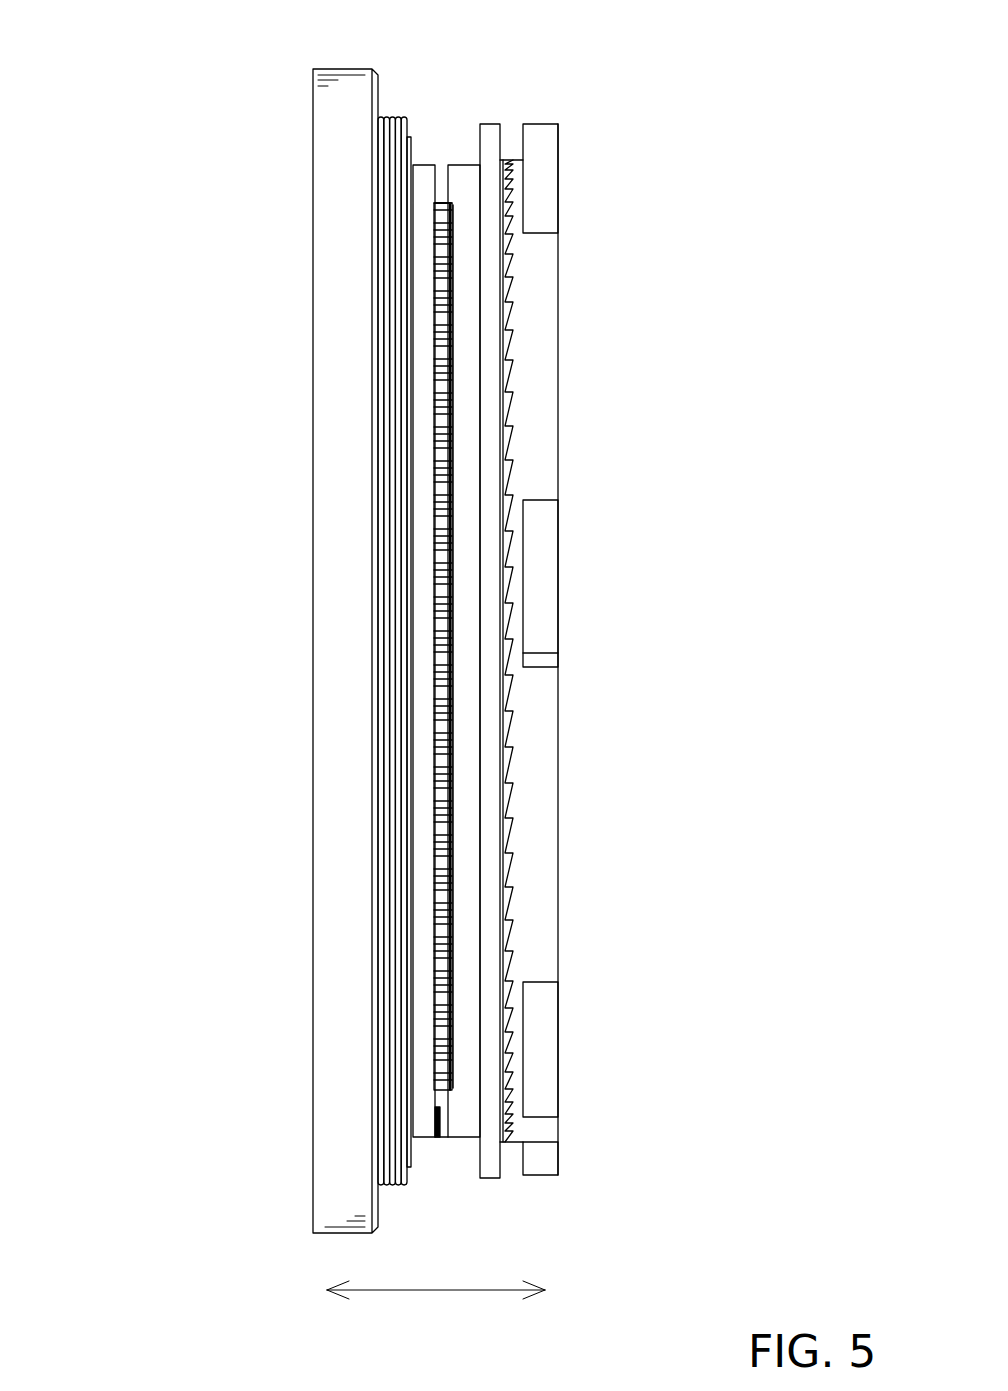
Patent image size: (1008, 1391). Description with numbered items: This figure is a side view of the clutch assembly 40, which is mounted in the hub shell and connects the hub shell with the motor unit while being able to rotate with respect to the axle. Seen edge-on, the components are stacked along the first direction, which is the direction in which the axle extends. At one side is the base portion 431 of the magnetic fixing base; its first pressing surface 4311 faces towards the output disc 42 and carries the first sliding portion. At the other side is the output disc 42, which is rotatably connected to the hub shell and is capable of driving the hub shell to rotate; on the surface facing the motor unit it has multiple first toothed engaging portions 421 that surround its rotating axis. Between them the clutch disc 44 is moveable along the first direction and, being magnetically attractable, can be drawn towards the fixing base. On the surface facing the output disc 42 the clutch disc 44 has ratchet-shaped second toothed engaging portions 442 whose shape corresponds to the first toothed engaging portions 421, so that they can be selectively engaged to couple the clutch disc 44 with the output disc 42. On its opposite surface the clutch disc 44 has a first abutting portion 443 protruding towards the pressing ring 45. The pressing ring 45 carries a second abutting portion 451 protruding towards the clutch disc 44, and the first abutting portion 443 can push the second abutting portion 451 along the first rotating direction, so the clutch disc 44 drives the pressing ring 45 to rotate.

The clutch assembly 40 is at (132, 40).
The output disc 42 is at (554, 299).
The first toothed engaging portions 421 is at (510, 413).
The base portion 431 is at (328, 142).
The first pressing surface 4311 is at (411, 128).
The clutch disc 44 is at (506, 839).
The second toothed engaging portions 442 is at (510, 455).
The first abutting portion 443 is at (453, 755).
The pressing ring 45 is at (430, 170).
The second abutting portion 451 is at (450, 374).